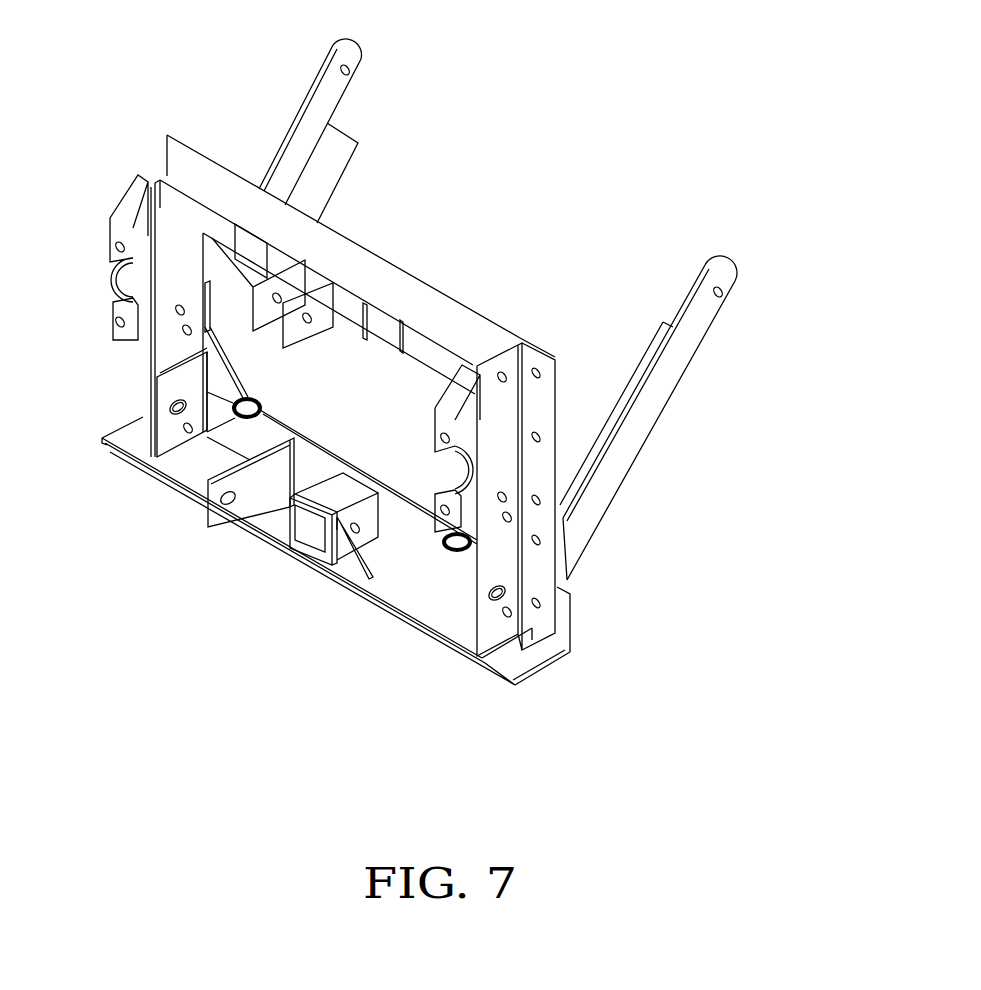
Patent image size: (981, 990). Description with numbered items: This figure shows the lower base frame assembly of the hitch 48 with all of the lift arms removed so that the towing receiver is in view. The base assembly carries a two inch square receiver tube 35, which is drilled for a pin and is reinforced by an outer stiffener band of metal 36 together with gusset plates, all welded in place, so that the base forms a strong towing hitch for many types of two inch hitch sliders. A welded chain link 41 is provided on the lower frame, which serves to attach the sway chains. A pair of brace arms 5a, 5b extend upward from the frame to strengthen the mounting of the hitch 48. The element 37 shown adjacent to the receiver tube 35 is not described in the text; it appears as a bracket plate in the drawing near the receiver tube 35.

The brace arm 5a is at (307, 88).
The brace arm 5b is at (650, 410).
The square receiver tube 35 is at (310, 547).
The outer stiffener band 36 is at (333, 556).
The bracket plate 37 is at (283, 520).
The welded chain link 41 is at (230, 418).
The hitch 48 is at (312, 700).